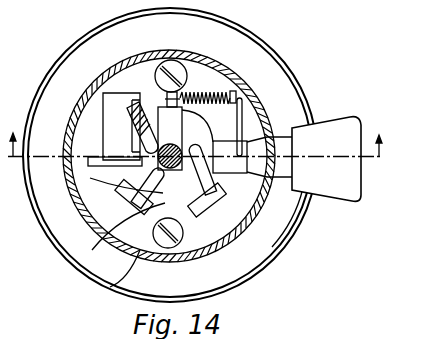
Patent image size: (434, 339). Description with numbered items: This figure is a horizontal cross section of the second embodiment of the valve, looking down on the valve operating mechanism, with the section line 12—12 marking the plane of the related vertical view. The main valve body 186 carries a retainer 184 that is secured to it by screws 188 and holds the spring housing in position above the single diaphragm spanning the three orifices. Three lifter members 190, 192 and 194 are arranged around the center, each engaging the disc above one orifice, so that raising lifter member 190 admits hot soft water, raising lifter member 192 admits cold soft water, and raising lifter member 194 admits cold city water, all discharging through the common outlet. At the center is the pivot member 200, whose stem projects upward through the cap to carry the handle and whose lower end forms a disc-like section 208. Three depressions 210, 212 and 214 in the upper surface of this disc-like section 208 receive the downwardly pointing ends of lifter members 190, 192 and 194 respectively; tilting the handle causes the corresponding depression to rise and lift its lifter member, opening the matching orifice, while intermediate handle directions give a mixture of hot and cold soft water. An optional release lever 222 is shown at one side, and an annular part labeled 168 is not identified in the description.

The section line 12- 12 is at (198, 134).
The annular hatched ring 168 is at (205, 60).
The retainer 184 is at (240, 226).
The main valve body 186 is at (243, 264).
The screws 188 is at (110, 287).
The lifter member 190 is at (132, 110).
The lifter member 192 is at (122, 181).
The lifter member 194 is at (241, 205).
The pivot member 200 is at (183, 233).
The disc-like section 208 is at (108, 236).
The depression 210 is at (155, 103).
The depression 212 is at (70, 182).
The depression 214 is at (228, 107).
The release lever 222 is at (330, 125).